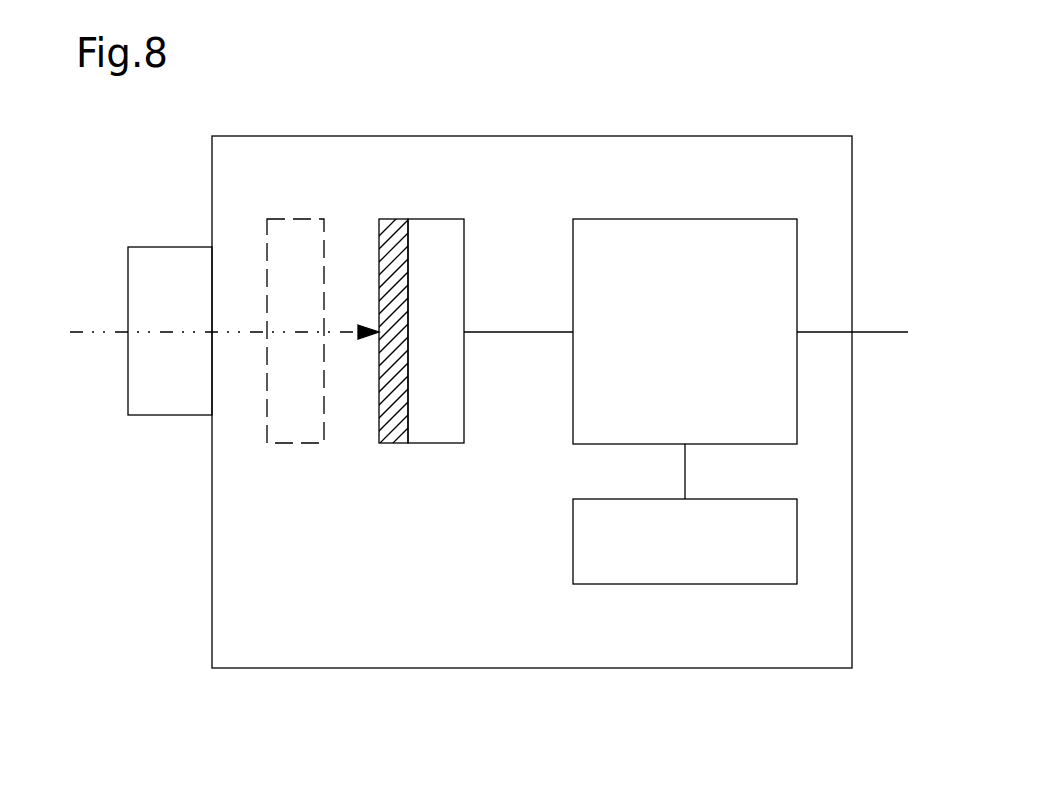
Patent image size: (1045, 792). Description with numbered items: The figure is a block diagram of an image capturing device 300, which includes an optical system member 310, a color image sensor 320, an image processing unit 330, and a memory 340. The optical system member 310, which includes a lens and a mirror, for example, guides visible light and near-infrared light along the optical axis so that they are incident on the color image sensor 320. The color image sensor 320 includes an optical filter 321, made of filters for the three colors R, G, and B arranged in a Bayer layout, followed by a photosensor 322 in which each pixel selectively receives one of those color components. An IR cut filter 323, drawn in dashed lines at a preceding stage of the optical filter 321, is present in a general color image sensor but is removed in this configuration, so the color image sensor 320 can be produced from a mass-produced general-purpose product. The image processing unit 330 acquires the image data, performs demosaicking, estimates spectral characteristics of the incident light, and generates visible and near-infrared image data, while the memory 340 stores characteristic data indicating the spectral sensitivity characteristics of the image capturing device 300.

The image capturing device 300 is at (212, 152).
The optical system member 310 is at (170, 247).
The color image sensor 320 is at (362, 373).
The optical filter 321 is at (393, 447).
The photosensor 322 is at (442, 358).
The IR cut filter 323 is at (295, 447).
The image processing unit 330 is at (672, 217).
The memory 340 is at (670, 586).